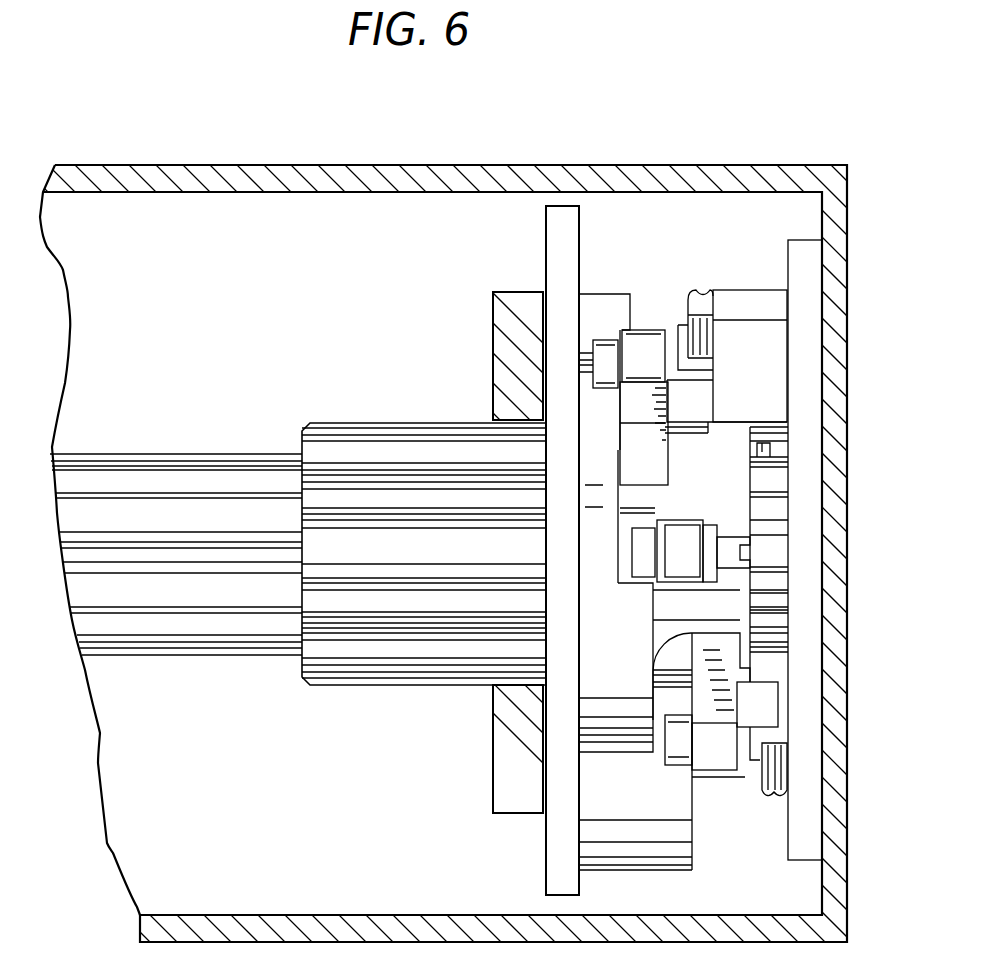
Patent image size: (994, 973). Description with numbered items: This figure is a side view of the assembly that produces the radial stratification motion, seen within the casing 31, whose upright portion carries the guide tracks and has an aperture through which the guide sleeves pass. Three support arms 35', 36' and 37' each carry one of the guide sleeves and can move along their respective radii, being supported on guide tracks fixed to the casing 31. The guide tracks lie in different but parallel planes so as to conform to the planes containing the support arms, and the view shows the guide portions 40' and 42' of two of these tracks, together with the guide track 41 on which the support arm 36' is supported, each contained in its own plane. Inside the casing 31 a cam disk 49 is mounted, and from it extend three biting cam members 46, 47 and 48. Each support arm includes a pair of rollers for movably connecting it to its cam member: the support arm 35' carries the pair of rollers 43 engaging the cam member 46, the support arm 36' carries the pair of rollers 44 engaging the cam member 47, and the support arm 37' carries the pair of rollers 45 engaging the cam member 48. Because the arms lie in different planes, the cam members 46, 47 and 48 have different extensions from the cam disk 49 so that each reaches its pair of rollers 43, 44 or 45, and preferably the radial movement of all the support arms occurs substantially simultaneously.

The casing 31 is at (847, 322).
The cam disk 49 is at (556, 240).
The cam member 48 is at (587, 373).
The pair of rollers 45 is at (641, 312).
The guide portion of guide track 42 42' is at (735, 320).
The support arm 37' is at (703, 399).
The support arm 36' is at (696, 527).
The pair of rollers 44 is at (643, 585).
The guide track 41 is at (750, 553).
The cam member 47 is at (622, 700).
The support arm 35' is at (701, 751).
The pair of rollers 43 is at (677, 765).
The guide portion of guide track 40 40' is at (762, 774).
The cam member 46 is at (685, 850).